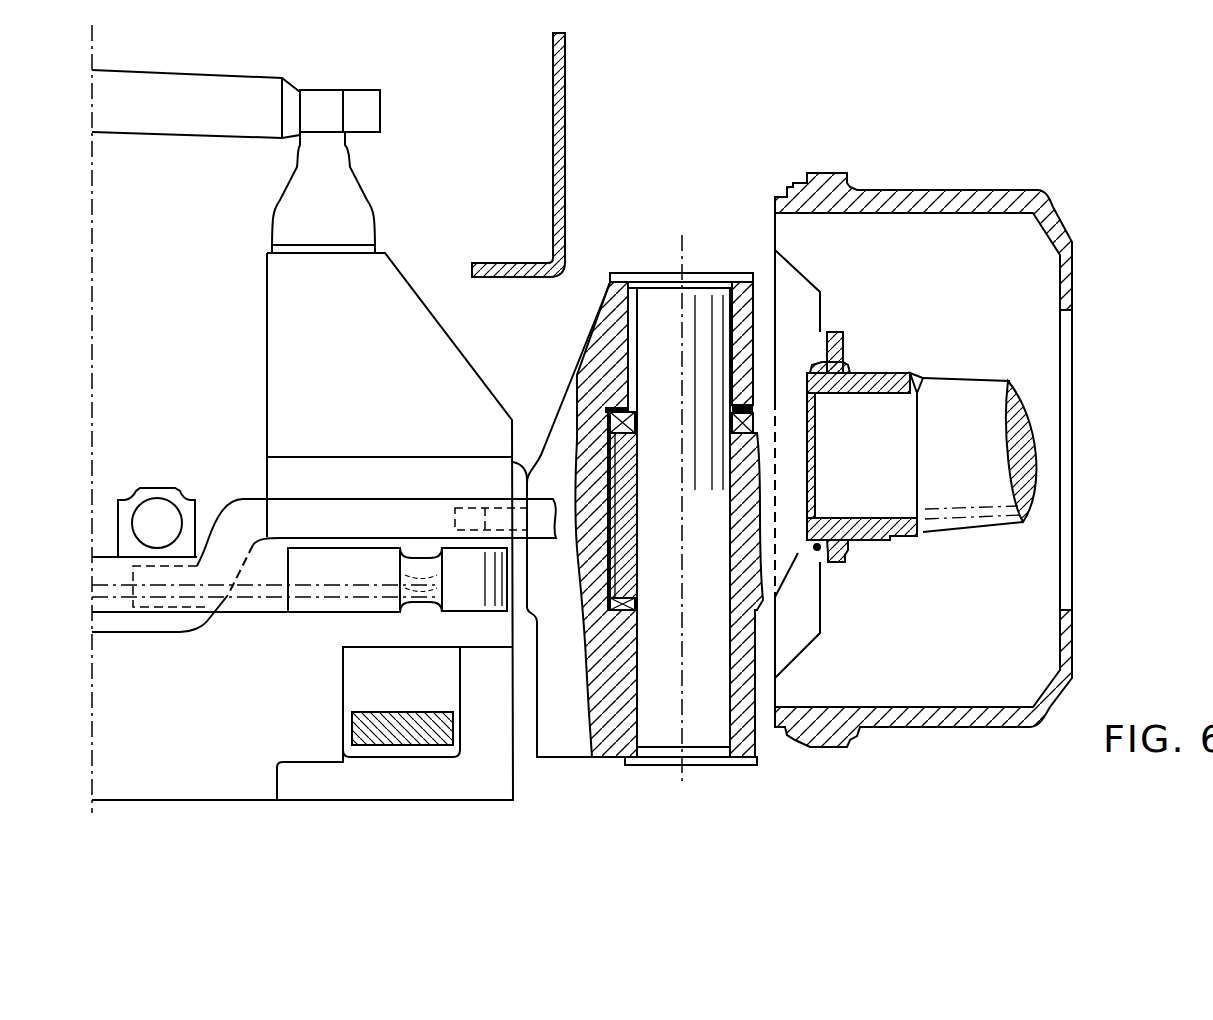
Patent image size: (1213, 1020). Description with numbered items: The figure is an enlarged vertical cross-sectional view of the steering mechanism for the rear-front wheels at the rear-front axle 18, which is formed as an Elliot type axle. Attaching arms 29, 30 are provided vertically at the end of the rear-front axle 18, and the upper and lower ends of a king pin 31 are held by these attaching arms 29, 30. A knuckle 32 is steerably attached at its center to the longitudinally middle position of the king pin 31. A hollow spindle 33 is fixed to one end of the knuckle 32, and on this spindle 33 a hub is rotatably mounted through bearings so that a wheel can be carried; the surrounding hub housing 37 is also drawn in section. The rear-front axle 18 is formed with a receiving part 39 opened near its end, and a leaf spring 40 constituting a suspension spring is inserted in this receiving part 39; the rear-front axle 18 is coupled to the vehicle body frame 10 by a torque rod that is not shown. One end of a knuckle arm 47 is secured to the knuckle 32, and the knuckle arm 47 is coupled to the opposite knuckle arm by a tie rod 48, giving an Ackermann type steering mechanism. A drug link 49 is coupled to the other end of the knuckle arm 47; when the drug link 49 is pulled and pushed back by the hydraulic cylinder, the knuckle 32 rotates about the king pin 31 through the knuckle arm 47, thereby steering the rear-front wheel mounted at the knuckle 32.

The vehicle body frame 10 is at (566, 181).
The rear-front axle 18 is at (237, 787).
The attaching arm 29 is at (589, 347).
The attaching arm 30 is at (745, 735).
The king pin 31 is at (657, 320).
The knuckle 32 is at (797, 555).
The hollow spindle 33 is at (977, 527).
The housing 37 is at (886, 190).
The receiving part 39 is at (455, 707).
The leaf spring 40 is at (388, 747).
The knuckle arm 47 is at (503, 527).
The tie rod 48 is at (253, 598).
The drug link 49 is at (163, 502).